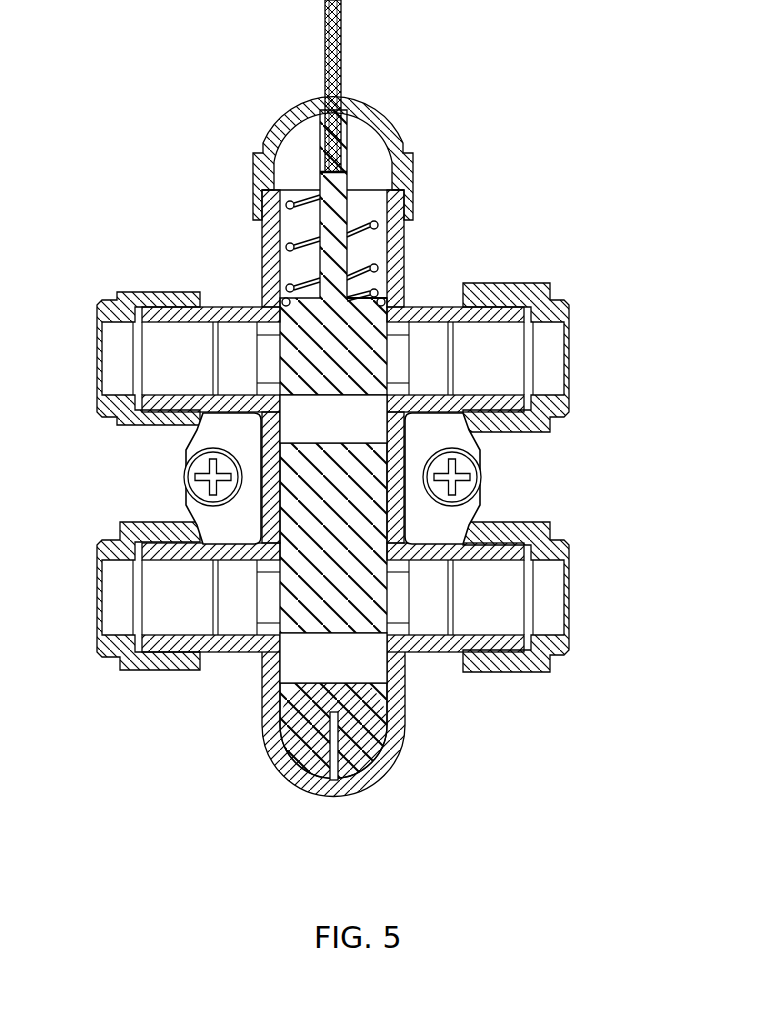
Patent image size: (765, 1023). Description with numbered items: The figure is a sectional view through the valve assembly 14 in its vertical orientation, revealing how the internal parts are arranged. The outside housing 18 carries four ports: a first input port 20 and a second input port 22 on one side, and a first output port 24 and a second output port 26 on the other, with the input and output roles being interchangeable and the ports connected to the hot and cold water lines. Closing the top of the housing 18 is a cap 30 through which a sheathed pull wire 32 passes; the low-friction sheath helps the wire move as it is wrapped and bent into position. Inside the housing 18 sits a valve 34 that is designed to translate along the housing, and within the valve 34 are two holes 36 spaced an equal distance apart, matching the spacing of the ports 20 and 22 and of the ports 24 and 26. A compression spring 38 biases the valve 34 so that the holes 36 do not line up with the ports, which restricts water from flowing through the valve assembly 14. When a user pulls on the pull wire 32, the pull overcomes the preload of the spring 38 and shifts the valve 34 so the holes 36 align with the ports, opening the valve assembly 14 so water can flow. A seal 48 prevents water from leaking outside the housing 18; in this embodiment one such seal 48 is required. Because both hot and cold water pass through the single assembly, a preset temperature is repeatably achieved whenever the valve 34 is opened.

The valve assembly 14 is at (586, 175).
The housing 18 is at (287, 760).
The first input port 20 is at (158, 317).
The second input port 22 is at (157, 595).
The first output port 24 is at (503, 583).
The second output port 26 is at (505, 348).
The cap 30 is at (392, 128).
The sheathed pull wire 32 is at (341, 37).
The valve 34 is at (390, 733).
The holes 36 is at (318, 410).
The compression spring 38 is at (297, 243).
The seal 48 is at (390, 302).